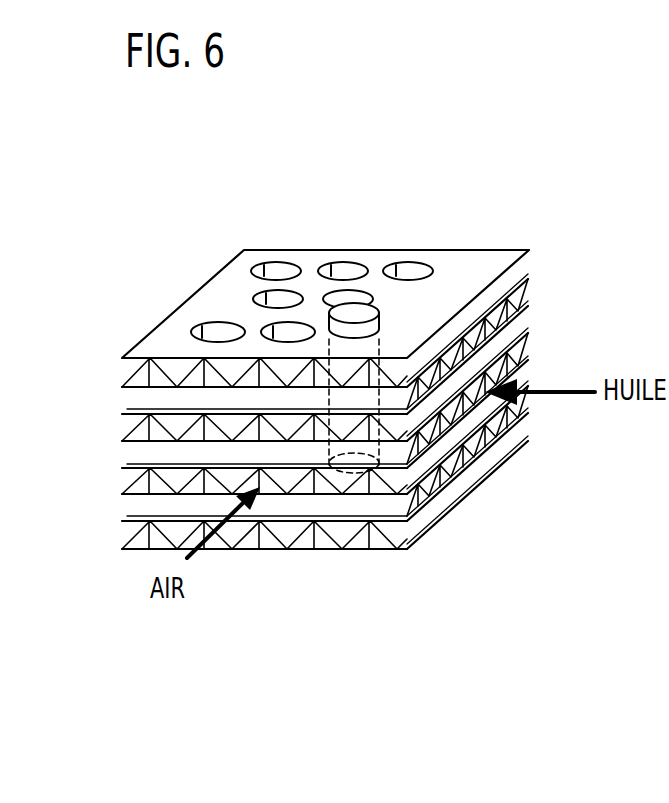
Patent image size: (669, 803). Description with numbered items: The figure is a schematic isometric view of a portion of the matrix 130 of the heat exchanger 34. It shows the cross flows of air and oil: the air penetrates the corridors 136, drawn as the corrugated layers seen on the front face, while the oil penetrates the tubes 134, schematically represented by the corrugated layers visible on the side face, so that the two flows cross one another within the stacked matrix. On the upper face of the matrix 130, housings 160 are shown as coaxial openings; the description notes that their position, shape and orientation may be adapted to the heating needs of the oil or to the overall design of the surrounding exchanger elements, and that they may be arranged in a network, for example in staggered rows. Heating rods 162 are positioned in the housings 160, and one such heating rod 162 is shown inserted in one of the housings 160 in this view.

The heat exchanger 34 is at (236, 180).
The matrix 130 is at (190, 281).
The tubes 134 is at (490, 337).
The corridors 136 is at (310, 432).
The housings 160 is at (400, 268).
The heating rods 162 is at (353, 332).